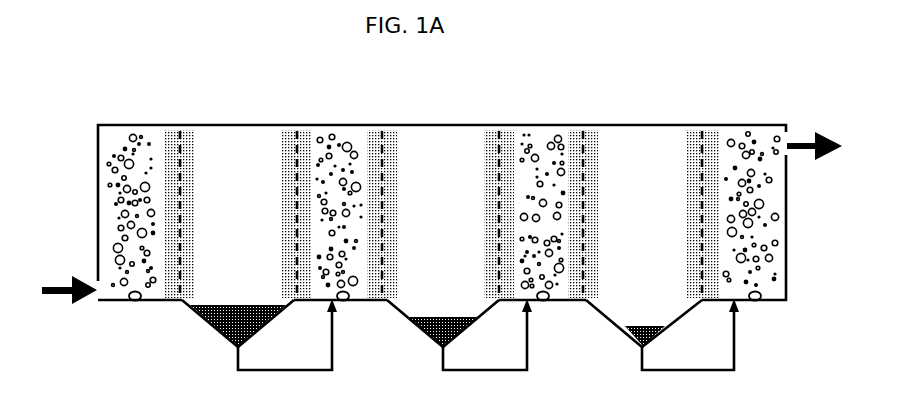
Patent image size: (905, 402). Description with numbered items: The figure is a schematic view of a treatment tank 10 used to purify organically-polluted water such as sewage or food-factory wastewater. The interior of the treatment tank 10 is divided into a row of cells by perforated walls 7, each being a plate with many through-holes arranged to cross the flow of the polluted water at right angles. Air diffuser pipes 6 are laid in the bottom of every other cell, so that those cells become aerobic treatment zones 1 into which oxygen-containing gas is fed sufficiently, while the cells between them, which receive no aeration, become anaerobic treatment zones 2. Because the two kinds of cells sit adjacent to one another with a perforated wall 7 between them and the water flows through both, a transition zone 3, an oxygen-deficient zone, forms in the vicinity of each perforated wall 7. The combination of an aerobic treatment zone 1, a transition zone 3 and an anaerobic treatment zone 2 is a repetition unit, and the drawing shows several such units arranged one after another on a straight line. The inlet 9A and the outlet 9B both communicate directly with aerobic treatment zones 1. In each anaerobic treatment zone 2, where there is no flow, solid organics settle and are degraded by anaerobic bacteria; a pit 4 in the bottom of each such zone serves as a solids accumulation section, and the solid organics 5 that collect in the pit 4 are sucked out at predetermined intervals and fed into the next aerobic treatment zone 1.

The aerobic treatment zone 1 is at (443, 191).
The anaerobic treatment zone 2 is at (441, 195).
The transition zone 3 is at (442, 195).
The pit 4 is at (217, 337).
The solid organics 5 is at (238, 301).
The air diffuser pipe 6 is at (131, 301).
The perforated wall 7 is at (185, 145).
The inlet 9A is at (95, 282).
The outlet 9B is at (785, 142).
The treatment tank 10 is at (72, 162).